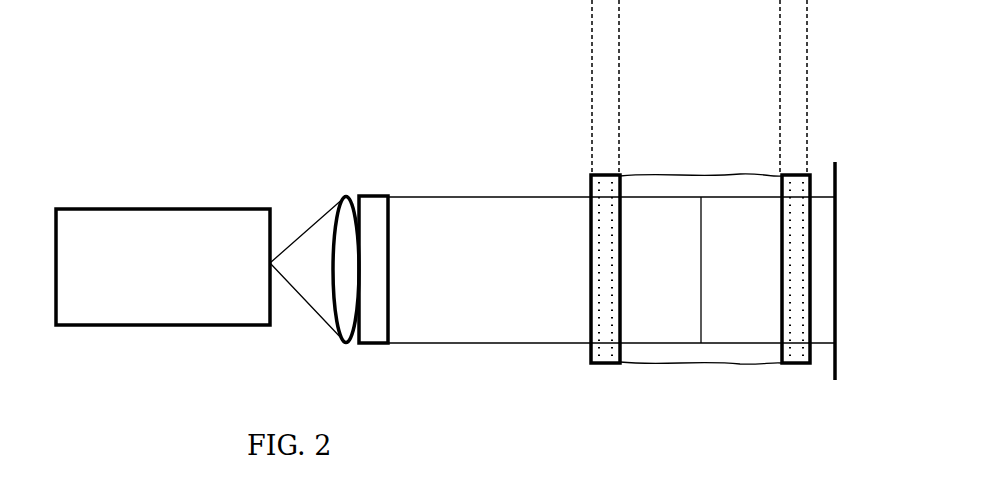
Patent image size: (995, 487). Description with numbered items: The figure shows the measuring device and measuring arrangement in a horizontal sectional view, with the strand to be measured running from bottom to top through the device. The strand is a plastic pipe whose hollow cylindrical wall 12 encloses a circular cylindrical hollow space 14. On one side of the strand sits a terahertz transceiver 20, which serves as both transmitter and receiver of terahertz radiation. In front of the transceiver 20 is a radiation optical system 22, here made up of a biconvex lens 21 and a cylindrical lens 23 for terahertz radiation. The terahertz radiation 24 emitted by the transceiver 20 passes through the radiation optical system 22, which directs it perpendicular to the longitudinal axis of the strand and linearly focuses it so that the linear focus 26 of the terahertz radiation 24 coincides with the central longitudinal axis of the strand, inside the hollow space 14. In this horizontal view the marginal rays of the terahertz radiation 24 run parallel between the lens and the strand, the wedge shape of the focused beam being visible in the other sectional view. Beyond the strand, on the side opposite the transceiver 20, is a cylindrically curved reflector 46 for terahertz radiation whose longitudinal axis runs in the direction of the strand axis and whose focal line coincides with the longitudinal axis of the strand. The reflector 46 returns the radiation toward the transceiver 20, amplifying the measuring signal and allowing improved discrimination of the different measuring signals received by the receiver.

The wall 12 is at (794, 236).
The hollow space 14 is at (653, 320).
The terahertz transceiver 20 is at (203, 240).
The biconvex lens 21 is at (342, 302).
The radiation optical system 22 is at (361, 158).
The cylindrical lens 23 is at (378, 306).
The terahertz radiation 24 is at (500, 238).
The linear focus 26 is at (699, 280).
The reflector 46 is at (838, 227).